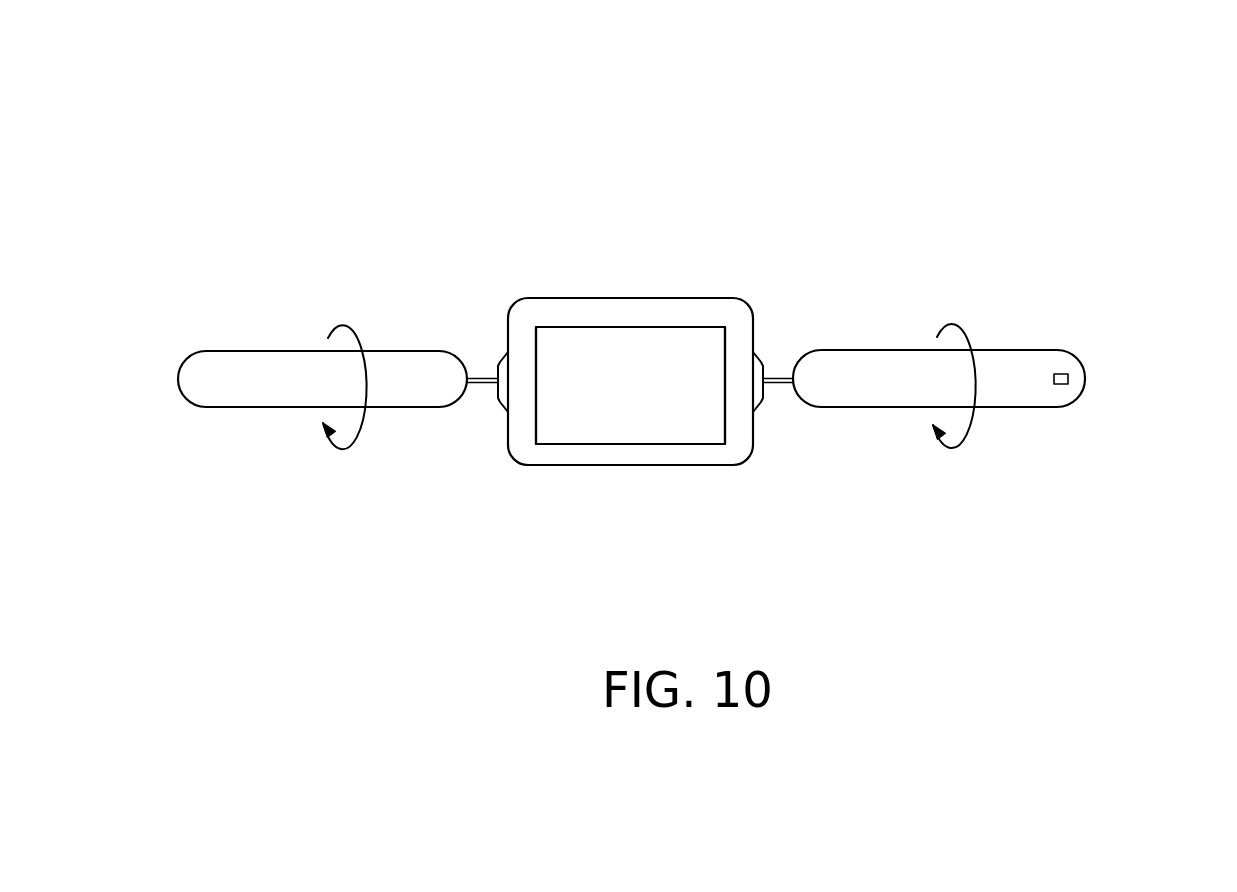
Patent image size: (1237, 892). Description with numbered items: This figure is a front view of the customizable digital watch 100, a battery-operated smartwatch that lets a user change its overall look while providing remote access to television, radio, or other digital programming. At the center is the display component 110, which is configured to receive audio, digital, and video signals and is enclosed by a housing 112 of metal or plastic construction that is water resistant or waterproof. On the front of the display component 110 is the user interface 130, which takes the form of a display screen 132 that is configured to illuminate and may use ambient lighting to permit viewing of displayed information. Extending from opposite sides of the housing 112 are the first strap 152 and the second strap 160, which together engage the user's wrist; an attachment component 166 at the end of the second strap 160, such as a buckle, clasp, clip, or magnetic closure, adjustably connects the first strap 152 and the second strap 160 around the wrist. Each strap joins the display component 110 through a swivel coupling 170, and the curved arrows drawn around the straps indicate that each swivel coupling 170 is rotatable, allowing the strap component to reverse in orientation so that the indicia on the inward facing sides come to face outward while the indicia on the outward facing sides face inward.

The customizable digital watch 100 is at (991, 226).
The display component 110 is at (731, 281).
The housing 112 is at (663, 275).
The user interface 130 is at (670, 469).
The display screen 132 is at (635, 420).
The first strap 152 is at (264, 331).
The second strap 160 is at (1046, 335).
The attachment component 166 is at (1068, 378).
The swivel coupling 170 is at (482, 385).